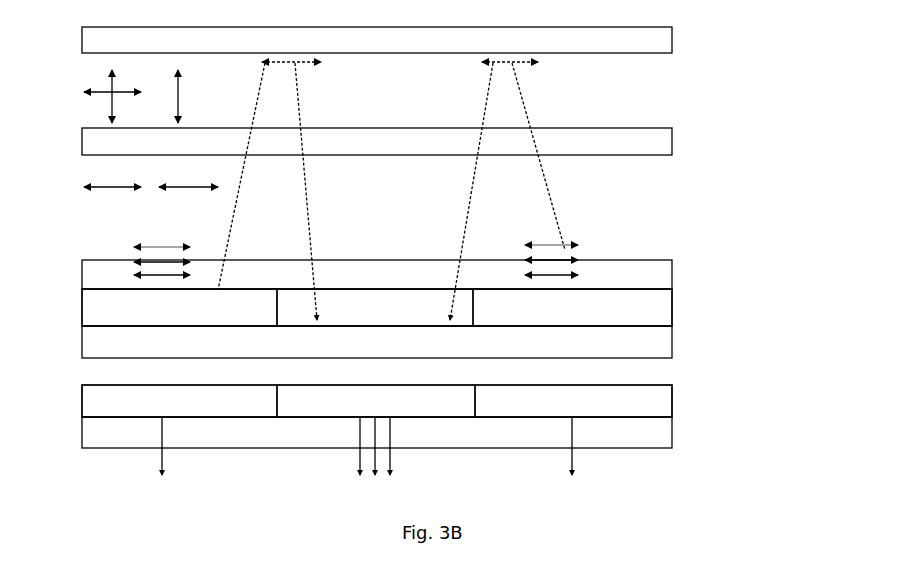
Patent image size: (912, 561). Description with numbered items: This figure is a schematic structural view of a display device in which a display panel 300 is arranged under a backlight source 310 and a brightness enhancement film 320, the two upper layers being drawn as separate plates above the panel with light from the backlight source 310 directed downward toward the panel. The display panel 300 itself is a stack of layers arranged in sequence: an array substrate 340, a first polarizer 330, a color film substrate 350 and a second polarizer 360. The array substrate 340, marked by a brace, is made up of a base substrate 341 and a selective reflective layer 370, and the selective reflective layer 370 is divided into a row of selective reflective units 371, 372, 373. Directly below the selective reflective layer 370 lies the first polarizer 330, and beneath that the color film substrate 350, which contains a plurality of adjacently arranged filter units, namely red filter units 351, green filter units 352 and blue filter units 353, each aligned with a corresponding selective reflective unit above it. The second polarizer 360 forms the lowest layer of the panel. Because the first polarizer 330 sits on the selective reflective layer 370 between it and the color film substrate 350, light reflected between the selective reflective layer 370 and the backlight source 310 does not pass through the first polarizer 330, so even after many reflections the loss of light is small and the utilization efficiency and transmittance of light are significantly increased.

The display panel 300 is at (433, 354).
The backlight source 310 is at (662, 43).
The brightness enhancement film 320 is at (662, 143).
The first polarizer 330 is at (662, 345).
The array substrate 340 is at (396, 285).
The base substrate 341 is at (662, 280).
The color film substrate 350 is at (425, 426).
The red filter unit 351 is at (179, 430).
The green filter unit 352 is at (376, 430).
The blue filter unit 353 is at (573, 430).
The second polarizer 360 is at (425, 430).
The selective reflective layer 370 is at (425, 307).
The selective reflective unit 371 is at (179, 307).
The selective reflective unit 372 is at (375, 307).
The selective reflective unit 373 is at (572, 307).